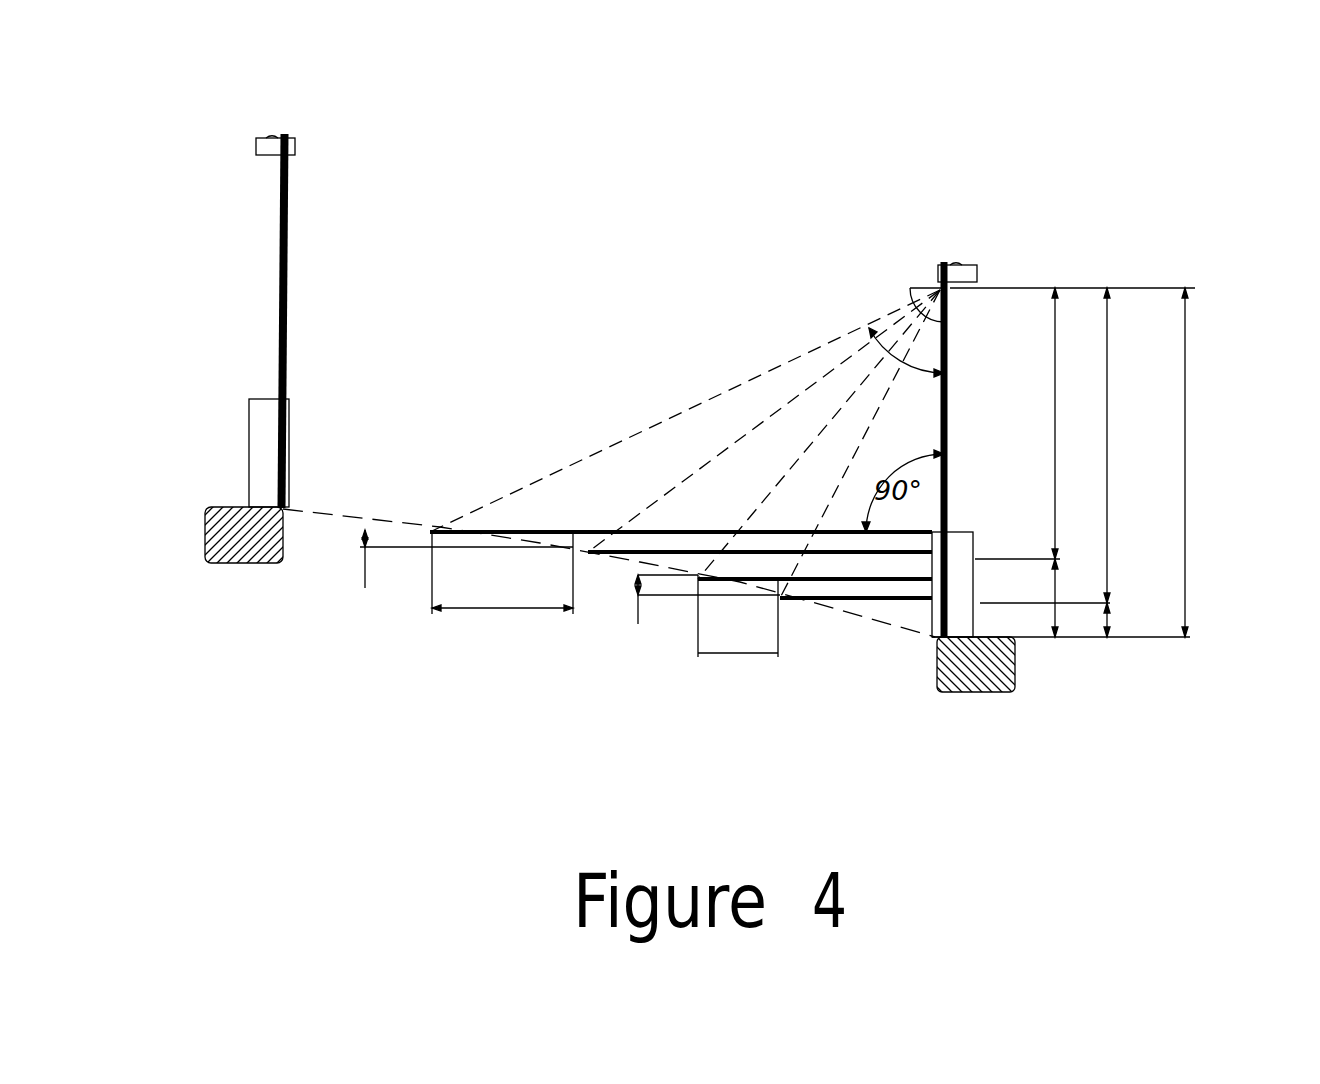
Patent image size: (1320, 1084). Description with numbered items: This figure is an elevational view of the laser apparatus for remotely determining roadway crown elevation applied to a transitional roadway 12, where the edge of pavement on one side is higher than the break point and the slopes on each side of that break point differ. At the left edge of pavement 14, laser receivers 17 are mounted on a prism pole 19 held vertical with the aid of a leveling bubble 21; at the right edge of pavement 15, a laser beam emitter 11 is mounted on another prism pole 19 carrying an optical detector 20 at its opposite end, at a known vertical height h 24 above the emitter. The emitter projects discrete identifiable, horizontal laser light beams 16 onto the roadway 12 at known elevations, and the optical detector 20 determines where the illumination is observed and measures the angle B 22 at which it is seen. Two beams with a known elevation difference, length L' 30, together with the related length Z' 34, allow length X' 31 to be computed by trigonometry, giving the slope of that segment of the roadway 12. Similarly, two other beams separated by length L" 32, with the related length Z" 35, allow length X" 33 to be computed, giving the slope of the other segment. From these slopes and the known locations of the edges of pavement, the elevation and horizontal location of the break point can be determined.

The laser beam emitter 11 is at (962, 524).
The roadway 12 is at (355, 516).
The left edge of pavement 14 is at (252, 568).
The right edge of pavement 15 is at (1018, 680).
The laser light beams 16 is at (655, 531).
The laser receivers 17 is at (265, 396).
The prism pole 19 is at (296, 205).
The optical detector 20 is at (915, 287).
The leveling bubble 21 is at (268, 135).
The angle B 22 is at (868, 343).
The vertical height h 24 is at (1186, 488).
The length L' 30 is at (342, 604).
The length X' 31 is at (471, 641).
The length L" 32 is at (604, 652).
The length X" 33 is at (719, 683).
The length Z' 34 is at (1056, 590).
The length Z" 35 is at (1142, 627).